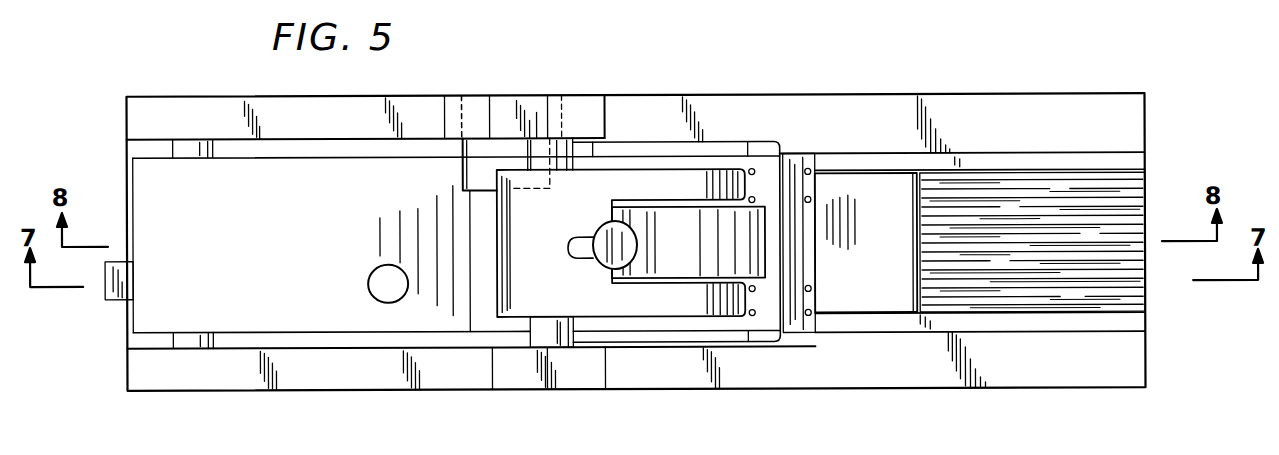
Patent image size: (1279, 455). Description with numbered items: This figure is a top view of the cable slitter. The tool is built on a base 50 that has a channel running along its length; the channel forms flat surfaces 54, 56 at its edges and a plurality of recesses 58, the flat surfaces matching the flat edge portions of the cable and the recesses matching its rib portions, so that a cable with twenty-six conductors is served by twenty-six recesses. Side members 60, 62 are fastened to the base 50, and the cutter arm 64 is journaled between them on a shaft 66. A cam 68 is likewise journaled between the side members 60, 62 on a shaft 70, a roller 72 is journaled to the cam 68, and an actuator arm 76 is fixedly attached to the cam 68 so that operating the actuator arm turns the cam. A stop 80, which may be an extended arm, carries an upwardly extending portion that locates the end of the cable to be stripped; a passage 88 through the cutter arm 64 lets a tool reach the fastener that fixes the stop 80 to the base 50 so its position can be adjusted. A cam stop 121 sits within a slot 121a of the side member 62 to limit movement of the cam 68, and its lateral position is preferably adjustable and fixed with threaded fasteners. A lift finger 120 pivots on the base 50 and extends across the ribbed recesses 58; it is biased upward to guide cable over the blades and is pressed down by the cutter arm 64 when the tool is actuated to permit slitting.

The base 50 is at (1112, 390).
The flat surface 54 is at (1140, 326).
The flat surface 56 is at (1140, 163).
The recesses 58 is at (1138, 211).
The side member 60 is at (358, 392).
The side member 62 is at (215, 95).
The cutter arm 64 is at (707, 160).
The shaft 66 is at (218, 338).
The cam 68 is at (621, 243).
The shaft 70 is at (528, 338).
The roller 72 is at (688, 243).
The actuator arm 76 is at (596, 228).
The stop 80 is at (117, 300).
The passage 88 is at (376, 268).
The lift finger 120 is at (866, 242).
The cam stop 121 is at (463, 173).
The slot 121a is at (458, 108).